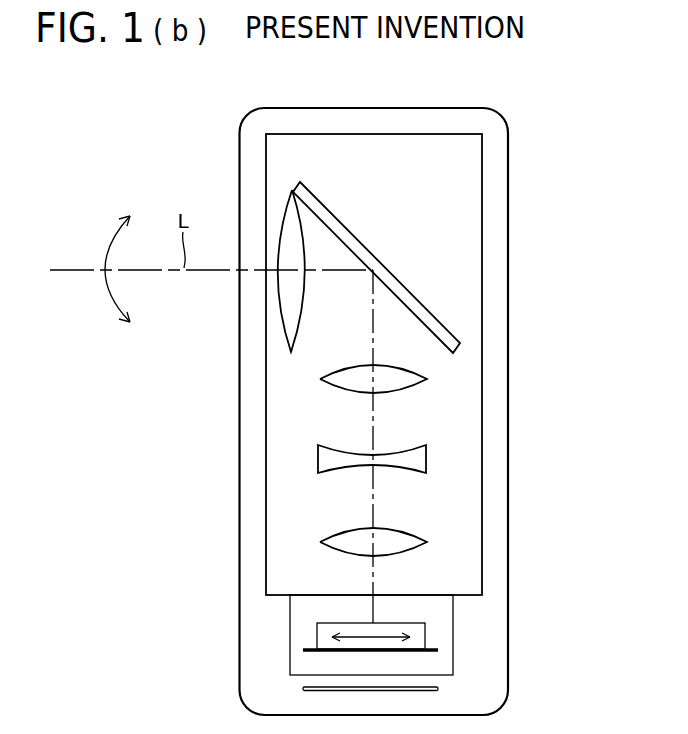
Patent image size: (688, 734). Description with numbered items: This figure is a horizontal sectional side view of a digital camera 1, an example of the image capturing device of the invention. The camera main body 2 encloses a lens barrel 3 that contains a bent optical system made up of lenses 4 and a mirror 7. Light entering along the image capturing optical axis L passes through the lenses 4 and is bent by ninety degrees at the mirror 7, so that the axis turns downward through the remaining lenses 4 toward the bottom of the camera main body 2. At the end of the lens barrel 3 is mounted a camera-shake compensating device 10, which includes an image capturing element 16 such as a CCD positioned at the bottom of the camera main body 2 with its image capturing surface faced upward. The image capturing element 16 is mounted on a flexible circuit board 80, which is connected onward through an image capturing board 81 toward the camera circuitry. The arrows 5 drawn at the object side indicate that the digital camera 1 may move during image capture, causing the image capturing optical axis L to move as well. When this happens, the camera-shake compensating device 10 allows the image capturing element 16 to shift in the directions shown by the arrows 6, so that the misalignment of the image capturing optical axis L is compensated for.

The digital camera 1 is at (547, 118).
The camera main body 2 is at (480, 107).
The lens barrel 3 is at (482, 157).
The lenses 4 is at (427, 542).
The arrows 5 is at (106, 250).
The arrows 6 is at (355, 636).
The mirror 7 is at (334, 216).
The camera-shake compensating device 10 is at (453, 613).
The image capturing element 16 is at (413, 623).
The flexible circuit board 80 is at (438, 650).
The image capturing board 81 is at (438, 688).